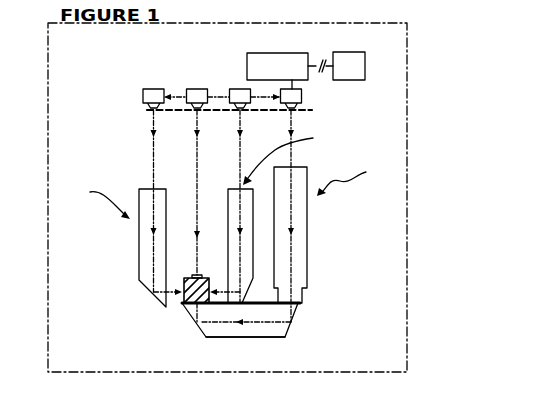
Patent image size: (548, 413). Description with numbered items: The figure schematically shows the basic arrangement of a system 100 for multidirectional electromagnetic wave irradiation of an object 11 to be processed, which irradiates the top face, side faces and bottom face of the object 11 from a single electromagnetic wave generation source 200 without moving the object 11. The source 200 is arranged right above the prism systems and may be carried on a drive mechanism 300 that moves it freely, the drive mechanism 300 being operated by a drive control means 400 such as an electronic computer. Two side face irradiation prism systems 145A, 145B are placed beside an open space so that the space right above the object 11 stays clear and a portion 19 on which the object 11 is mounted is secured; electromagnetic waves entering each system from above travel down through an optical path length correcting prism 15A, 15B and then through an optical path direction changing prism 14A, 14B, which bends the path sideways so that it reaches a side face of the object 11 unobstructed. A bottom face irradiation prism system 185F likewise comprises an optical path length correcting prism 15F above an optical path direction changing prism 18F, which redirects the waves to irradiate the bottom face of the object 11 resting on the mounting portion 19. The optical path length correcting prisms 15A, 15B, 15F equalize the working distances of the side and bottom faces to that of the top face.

The system for multidirectional electromagnetic wave irradiation of object to be pro 100 is at (413, 108).
The electromagnetic wave generation source 200 is at (152, 89).
The drive mechanism 300 is at (289, 77).
The drive control means 400 is at (362, 76).
The optical path length correcting prism 15A is at (150, 188).
The optical path length correcting prism 15B is at (224, 190).
The optical path length correcting prism 15F is at (308, 242).
The side face irradiation prism system 145A is at (95, 201).
The side face irradiation prism system 145B is at (289, 153).
The bottom face irradiation prism system 185F is at (357, 177).
The optical path direction changing prism 14A is at (155, 302).
The optical path direction changing prism 14B is at (228, 284).
The object to be processed 11 is at (183, 298).
The optical path direction changing prism 18F is at (296, 321).
The portion on which object to be processed is mounted 19 is at (207, 307).